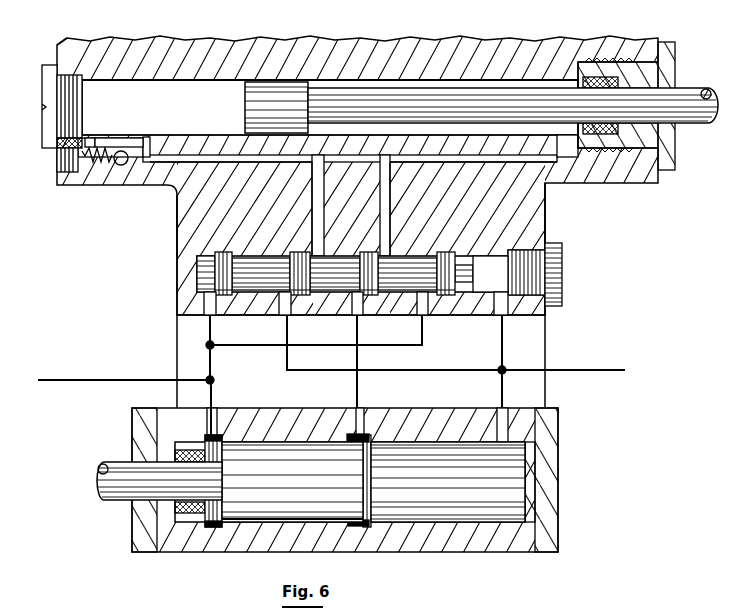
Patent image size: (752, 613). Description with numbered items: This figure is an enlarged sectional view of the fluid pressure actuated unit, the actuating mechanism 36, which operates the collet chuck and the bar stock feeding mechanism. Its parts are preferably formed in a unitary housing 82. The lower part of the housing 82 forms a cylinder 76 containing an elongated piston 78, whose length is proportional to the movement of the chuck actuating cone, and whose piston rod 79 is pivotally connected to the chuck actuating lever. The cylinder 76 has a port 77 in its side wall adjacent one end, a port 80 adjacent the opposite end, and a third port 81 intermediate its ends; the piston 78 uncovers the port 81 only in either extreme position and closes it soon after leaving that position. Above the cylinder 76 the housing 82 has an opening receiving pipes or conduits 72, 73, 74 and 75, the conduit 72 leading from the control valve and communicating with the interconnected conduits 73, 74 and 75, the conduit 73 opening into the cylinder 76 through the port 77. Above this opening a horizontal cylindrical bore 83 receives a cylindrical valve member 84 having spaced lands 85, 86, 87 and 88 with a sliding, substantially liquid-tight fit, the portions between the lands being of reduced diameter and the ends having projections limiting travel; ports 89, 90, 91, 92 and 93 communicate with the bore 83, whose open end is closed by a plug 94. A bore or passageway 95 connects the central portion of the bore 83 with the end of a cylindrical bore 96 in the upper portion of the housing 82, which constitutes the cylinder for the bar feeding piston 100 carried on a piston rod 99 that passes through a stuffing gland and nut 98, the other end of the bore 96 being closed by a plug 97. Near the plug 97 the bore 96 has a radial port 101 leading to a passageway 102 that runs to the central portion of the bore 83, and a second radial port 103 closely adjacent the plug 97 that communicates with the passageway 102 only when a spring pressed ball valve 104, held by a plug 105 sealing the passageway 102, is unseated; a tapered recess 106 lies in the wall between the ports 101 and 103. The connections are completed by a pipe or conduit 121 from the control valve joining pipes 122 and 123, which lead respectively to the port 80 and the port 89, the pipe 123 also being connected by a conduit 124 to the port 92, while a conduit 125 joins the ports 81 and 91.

The actuating mechanism 36 is at (560, 217).
The pipe or conduit 72 is at (570, 368).
The pipe or conduit 73 is at (497, 387).
The pipe or conduit 74 is at (448, 368).
The pipe or conduit 75 is at (504, 347).
The cylinder 76 is at (514, 500).
The port 77 is at (504, 414).
The piston 78 is at (246, 512).
The piston rod 79 is at (127, 496).
The port 80 is at (215, 408).
The port 81 is at (368, 391).
The housing 82 is at (192, 240).
The bore 83 is at (490, 285).
The valve member 84 is at (198, 270).
The land 85 is at (243, 237).
The land 86 is at (302, 258).
The land 87 is at (370, 258).
The land 88 is at (450, 258).
The port 89 is at (213, 314).
The port 90 is at (282, 314).
The port 91 is at (356, 314).
The port 92 is at (421, 314).
The port 93 is at (502, 305).
The plug 94 is at (555, 270).
The bore or passageway 95 is at (410, 164).
The cylindrical bore 96 is at (540, 80).
The plug 97 is at (50, 66).
The stuffing gland and nut 98 is at (663, 82).
The piston rod 99 is at (690, 124).
The piston 100 is at (290, 90).
The port 101 is at (150, 137).
The passageway 102 is at (270, 170).
The port 103 is at (92, 138).
The spring pressed ball valve 104 is at (119, 166).
The plug 105 is at (58, 160).
The tapered recess 106 is at (137, 146).
The pipe or conduit 121 is at (105, 377).
The pipe 122 is at (212, 372).
The pipe 123 is at (208, 345).
The pipe or conduit 124 is at (384, 348).
The pipe or conduit 125 is at (356, 391).